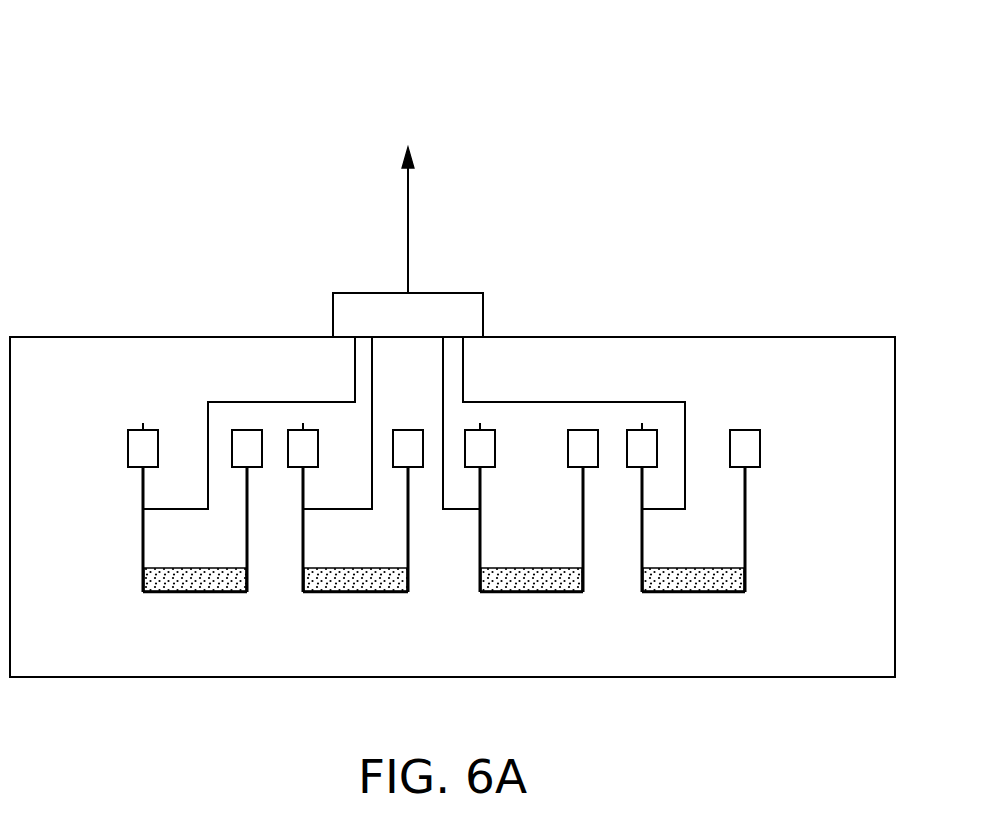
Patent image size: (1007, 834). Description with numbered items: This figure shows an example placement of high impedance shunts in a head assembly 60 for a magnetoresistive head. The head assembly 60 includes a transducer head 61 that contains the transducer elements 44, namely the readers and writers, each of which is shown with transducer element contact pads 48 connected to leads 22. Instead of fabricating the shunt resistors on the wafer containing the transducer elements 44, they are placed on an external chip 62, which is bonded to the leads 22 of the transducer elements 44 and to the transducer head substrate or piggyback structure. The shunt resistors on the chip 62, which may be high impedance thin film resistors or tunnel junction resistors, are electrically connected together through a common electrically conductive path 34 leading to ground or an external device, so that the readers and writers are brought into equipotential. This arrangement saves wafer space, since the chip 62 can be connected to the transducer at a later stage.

The head assembly 60 is at (143, 51).
The transducer head 61 is at (60, 378).
The external chip 62 is at (427, 328).
The common electrically conductive path 34 is at (408, 255).
The leads 22 is at (142, 537).
The transducer elements 44 is at (713, 593).
The transducer element contact pads 48 is at (760, 450).